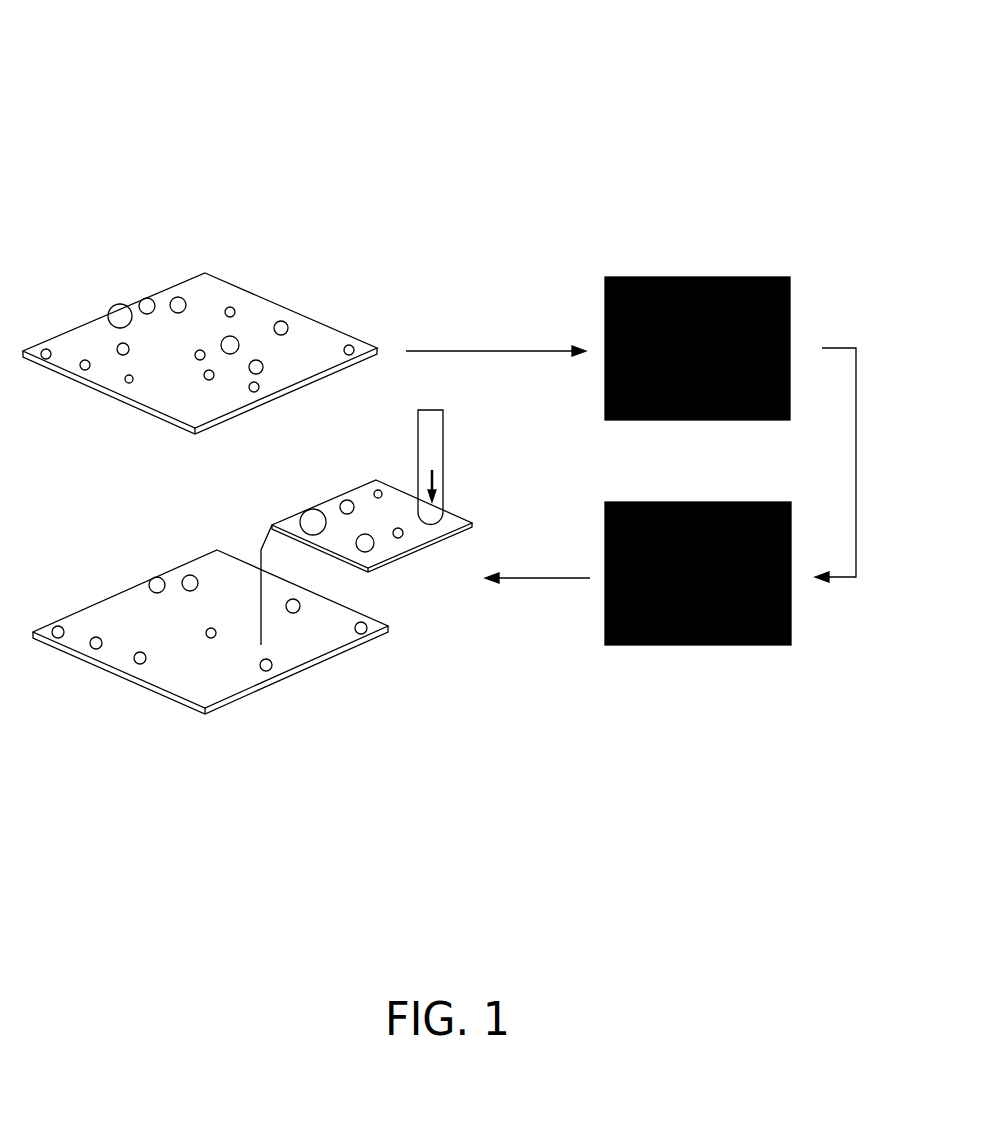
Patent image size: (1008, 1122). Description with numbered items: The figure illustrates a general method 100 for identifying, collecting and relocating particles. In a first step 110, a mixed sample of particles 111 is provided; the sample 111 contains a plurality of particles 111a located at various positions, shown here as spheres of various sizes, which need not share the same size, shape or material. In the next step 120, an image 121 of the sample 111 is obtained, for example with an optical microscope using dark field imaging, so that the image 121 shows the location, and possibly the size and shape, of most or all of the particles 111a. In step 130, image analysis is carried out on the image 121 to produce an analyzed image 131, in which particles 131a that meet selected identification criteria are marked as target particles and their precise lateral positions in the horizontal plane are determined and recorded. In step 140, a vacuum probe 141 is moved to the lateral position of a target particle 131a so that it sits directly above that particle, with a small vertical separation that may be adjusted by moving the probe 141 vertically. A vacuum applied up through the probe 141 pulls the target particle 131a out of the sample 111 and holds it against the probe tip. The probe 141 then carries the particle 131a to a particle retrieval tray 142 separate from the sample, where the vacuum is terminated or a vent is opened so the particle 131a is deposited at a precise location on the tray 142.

The method of manipulating particles 100 is at (140, 80).
The step of providing a mixed sample of particles 110 is at (188, 310).
The mixed sample of particles 111 is at (250, 291).
The particles 111a is at (205, 379).
The step of obtaining an image 120 is at (751, 281).
The image 121 is at (790, 310).
The step of analyzing the image 130 is at (766, 657).
The analyzed image 131 is at (791, 625).
The target particle 131a is at (442, 513).
The step of collecting a targeted particle 140 is at (320, 621).
The vacuum probe 141 is at (443, 440).
The particle retrieval tray 142 is at (410, 552).